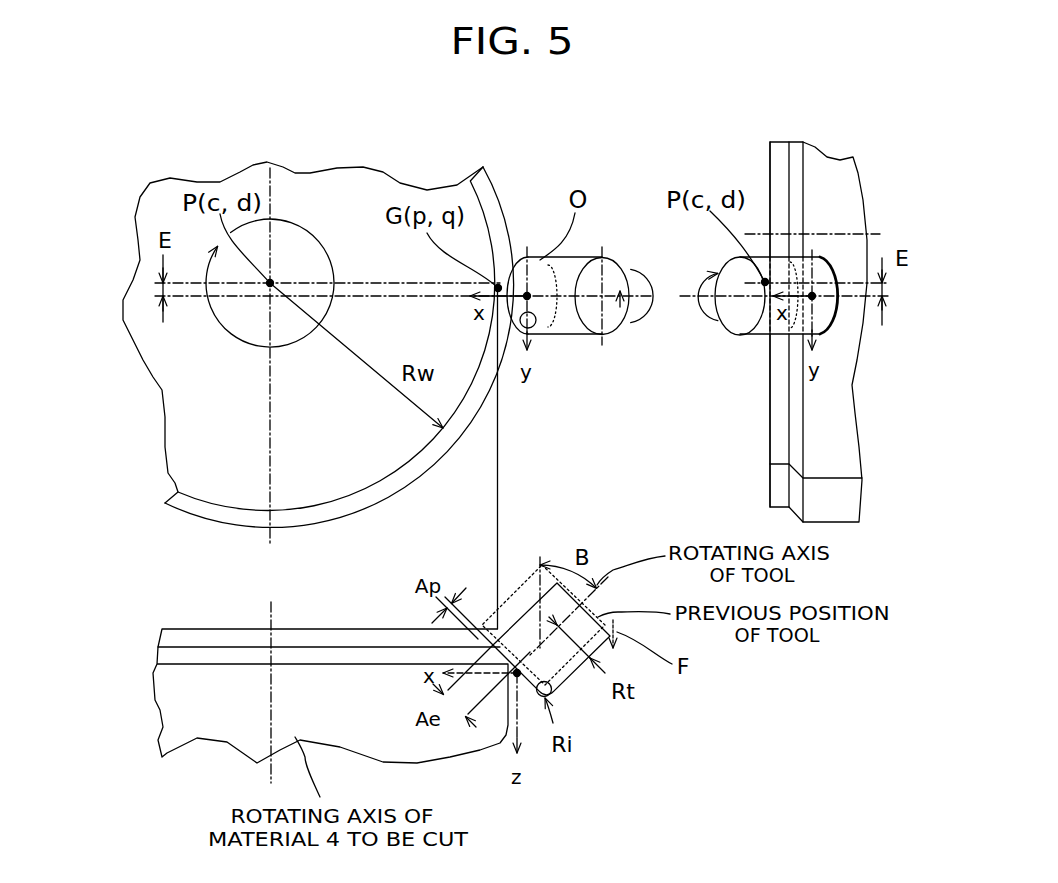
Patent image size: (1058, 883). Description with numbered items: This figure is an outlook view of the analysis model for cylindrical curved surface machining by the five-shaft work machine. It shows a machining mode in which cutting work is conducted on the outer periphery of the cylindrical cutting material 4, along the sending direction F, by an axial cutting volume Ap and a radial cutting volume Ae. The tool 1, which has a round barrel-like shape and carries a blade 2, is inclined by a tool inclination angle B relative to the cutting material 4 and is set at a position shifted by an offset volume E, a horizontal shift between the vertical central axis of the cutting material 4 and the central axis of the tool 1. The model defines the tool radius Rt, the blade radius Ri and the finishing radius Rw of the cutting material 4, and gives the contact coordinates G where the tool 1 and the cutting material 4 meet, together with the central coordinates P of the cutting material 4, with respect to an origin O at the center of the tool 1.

The tool 1 is at (598, 334).
The blade 2 is at (545, 330).
The cutting material 4 is at (207, 506).